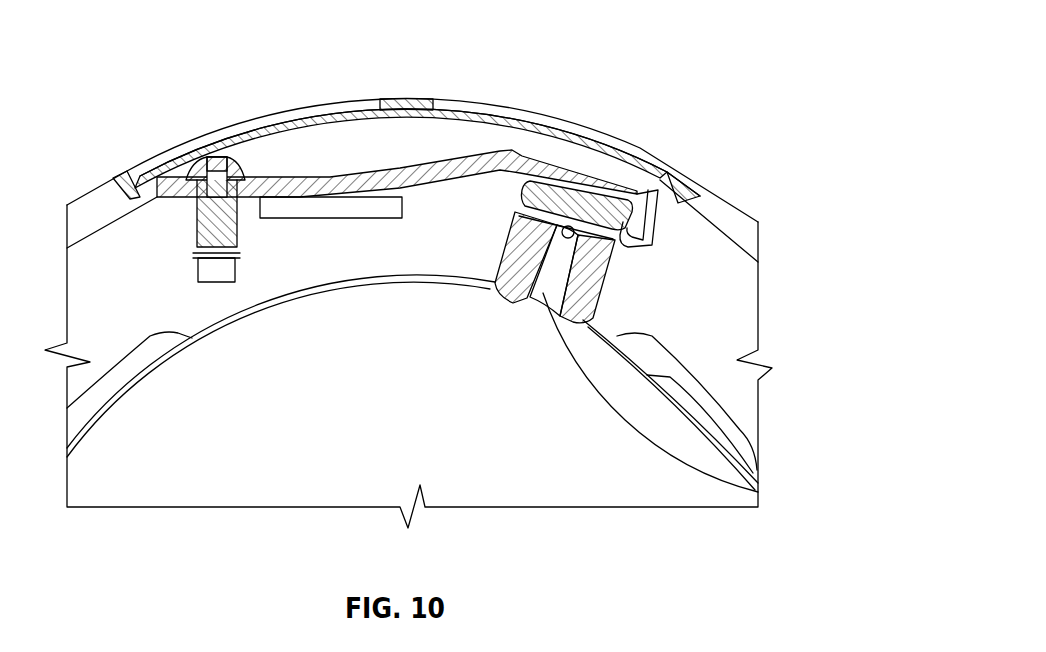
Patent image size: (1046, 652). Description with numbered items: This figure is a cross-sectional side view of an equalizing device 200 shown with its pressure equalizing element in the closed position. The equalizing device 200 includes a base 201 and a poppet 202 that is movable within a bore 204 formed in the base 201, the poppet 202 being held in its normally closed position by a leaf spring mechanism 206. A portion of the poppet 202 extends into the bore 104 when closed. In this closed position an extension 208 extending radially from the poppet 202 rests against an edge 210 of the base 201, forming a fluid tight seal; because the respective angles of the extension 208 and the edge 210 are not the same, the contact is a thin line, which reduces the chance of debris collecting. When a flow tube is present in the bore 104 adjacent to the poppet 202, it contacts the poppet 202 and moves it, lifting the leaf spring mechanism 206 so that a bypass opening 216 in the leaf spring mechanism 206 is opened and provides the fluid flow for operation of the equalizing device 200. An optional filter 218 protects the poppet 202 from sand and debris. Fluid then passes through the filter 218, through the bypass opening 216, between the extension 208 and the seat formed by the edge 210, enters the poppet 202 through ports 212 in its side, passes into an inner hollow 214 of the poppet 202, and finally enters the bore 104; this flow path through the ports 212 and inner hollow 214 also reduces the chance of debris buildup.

The equalizing device 200 is at (798, 44).
The base 201 is at (713, 362).
The poppet 202 is at (603, 275).
The bore 204 is at (642, 223).
The leaf spring mechanism 206 is at (460, 158).
The extension 208 is at (628, 256).
The edge 210 is at (605, 280).
The ports 212 is at (613, 250).
The inner hollow 214 is at (758, 492).
The bypass opening 216 is at (360, 195).
The filter 218 is at (412, 112).
The bore 104 is at (755, 445).